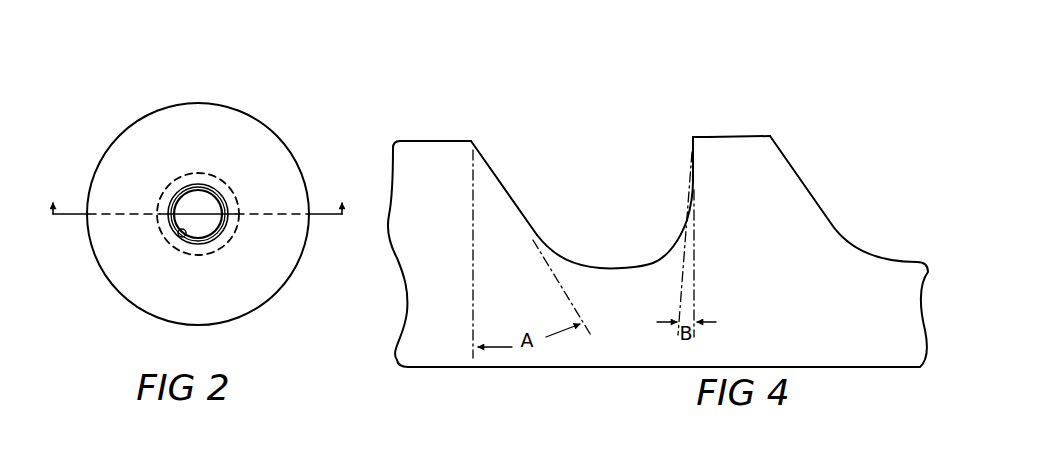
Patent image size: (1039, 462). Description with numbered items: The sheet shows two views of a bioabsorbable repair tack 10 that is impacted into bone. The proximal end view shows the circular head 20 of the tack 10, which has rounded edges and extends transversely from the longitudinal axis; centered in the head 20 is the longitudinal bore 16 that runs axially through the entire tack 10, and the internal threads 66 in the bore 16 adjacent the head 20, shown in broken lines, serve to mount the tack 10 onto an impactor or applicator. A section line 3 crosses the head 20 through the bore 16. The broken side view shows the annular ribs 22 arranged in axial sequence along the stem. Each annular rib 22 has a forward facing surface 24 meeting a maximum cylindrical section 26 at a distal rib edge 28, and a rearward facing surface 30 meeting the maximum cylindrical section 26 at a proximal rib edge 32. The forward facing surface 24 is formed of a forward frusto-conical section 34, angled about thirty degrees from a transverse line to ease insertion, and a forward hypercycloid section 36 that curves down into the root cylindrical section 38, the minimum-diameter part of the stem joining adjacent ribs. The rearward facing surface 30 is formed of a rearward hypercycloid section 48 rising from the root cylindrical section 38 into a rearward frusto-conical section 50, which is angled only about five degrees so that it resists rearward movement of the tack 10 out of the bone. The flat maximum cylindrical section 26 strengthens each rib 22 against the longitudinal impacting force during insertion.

In FIG. 2, the repair tack 10 is at (152, 109).
In FIG. 2, the head 20 is at (272, 291).
In FIG. 2, the longitudinal bore 16 is at (181, 237).
In FIG. 2, the internal threads 66 is at (218, 175).
In FIG. 2, the section line 3- 3 is at (197, 197).
In FIG. 4, the annular rib 22 is at (410, 138).
In FIG. 4, the forward facing surface 24 is at (540, 228).
In FIG. 4, the maximum cylindrical section 26 is at (437, 138).
In FIG. 4, the distal rib edge 28 is at (472, 140).
In FIG. 4, the rearward facing surface 30 is at (391, 174).
In FIG. 4, the proximal rib edge 32 is at (693, 136).
In FIG. 4, the forward frusto-conical section 34 is at (503, 186).
In FIG. 4, the forward hypercycloid section 36 is at (566, 255).
In FIG. 4, the root cylindrical section 38 is at (627, 268).
In FIG. 4, the rearward hypercycloid section 48 is at (677, 244).
In FIG. 4, the rearward frusto-conical section 50 is at (691, 154).